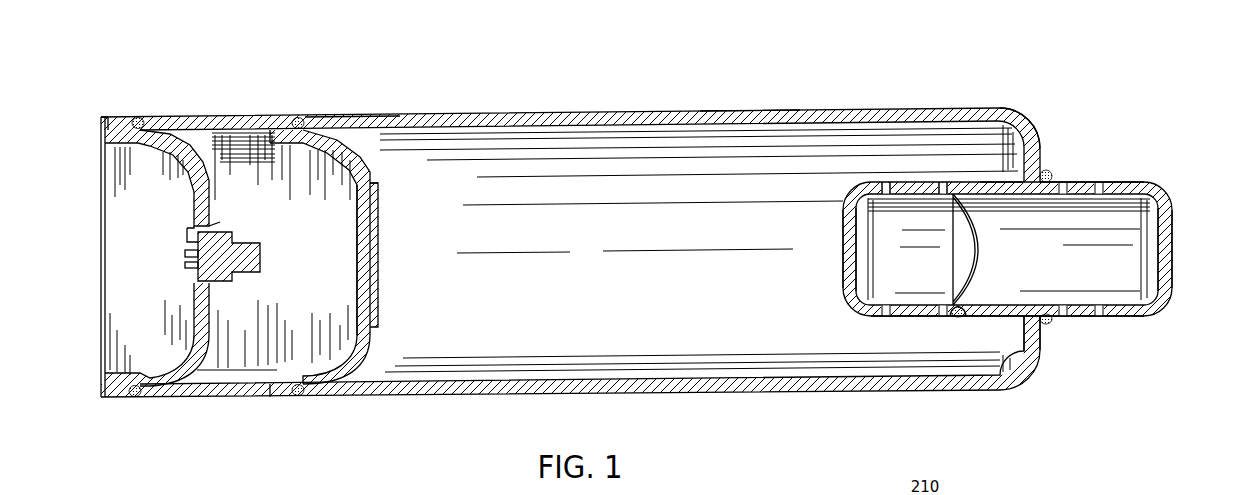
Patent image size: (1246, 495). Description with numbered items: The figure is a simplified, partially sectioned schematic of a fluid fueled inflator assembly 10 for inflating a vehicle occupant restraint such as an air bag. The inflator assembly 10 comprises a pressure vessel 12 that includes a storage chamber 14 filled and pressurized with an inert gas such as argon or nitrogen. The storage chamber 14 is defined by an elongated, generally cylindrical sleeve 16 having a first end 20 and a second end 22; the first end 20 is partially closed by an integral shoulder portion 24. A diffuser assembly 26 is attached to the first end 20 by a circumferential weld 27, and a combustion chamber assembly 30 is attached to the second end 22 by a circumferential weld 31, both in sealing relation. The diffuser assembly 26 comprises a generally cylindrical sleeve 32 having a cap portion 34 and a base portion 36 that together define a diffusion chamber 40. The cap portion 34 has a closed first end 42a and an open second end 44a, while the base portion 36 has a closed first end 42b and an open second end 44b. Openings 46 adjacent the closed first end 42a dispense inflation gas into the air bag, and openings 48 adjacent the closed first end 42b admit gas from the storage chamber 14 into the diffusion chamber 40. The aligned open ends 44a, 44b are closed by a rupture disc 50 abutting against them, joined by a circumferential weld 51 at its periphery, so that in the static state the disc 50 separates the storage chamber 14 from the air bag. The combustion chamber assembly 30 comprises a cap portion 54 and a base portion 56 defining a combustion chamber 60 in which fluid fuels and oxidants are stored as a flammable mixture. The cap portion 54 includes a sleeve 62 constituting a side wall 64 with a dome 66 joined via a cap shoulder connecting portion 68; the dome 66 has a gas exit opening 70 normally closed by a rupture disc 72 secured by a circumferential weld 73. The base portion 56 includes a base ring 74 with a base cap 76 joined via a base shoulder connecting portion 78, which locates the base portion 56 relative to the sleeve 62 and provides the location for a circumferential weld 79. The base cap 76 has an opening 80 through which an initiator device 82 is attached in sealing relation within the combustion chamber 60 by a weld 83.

The fluid fueled inflator assembly 10 is at (890, 100).
The pressure vessel 12 is at (617, 105).
The storage chamber 14 is at (530, 142).
The sleeve 16 is at (742, 116).
The first end 20 is at (1019, 124).
The second end 22 is at (317, 116).
The shoulder portion 24 is at (1030, 343).
The diffuser assembly 26 is at (1157, 180).
The circumferential weld 27 is at (1050, 171).
The combustion chamber assembly 30 is at (198, 112).
The circumferential weld 31 is at (296, 116).
The sleeve 32 is at (993, 182).
The cap portion 34 is at (1140, 314).
The base portion 36 is at (844, 232).
The diffusion chamber 40 is at (1148, 228).
The closed first end 42a is at (1172, 260).
The closed first end 42b is at (845, 263).
The open second end 44a is at (971, 314).
The open second end 44b is at (945, 316).
The openings 46 is at (1085, 181).
The openings 48 is at (900, 185).
The rupture disc 50 is at (980, 257).
The circumferential weld 51 is at (951, 185).
The cap portion 54 is at (269, 395).
The base portion 56 is at (191, 384).
The combustion chamber 60 is at (245, 345).
The sleeve 62 is at (243, 116).
The side wall 64 is at (160, 116).
The dome 66 is at (368, 338).
The cap shoulder connecting portion 68 is at (296, 398).
The gas exit opening 70 is at (356, 256).
The rupture disc 72 is at (378, 220).
The circumferential weld 73 is at (379, 186).
The base ring 74 is at (108, 116).
The base cap 76 is at (271, 170).
The base shoulder connecting portion 78 is at (126, 139).
The circumferential weld 79 is at (136, 397).
The opening 80 is at (222, 224).
The initiator device 82 is at (221, 262).
The weld 83 is at (195, 226).